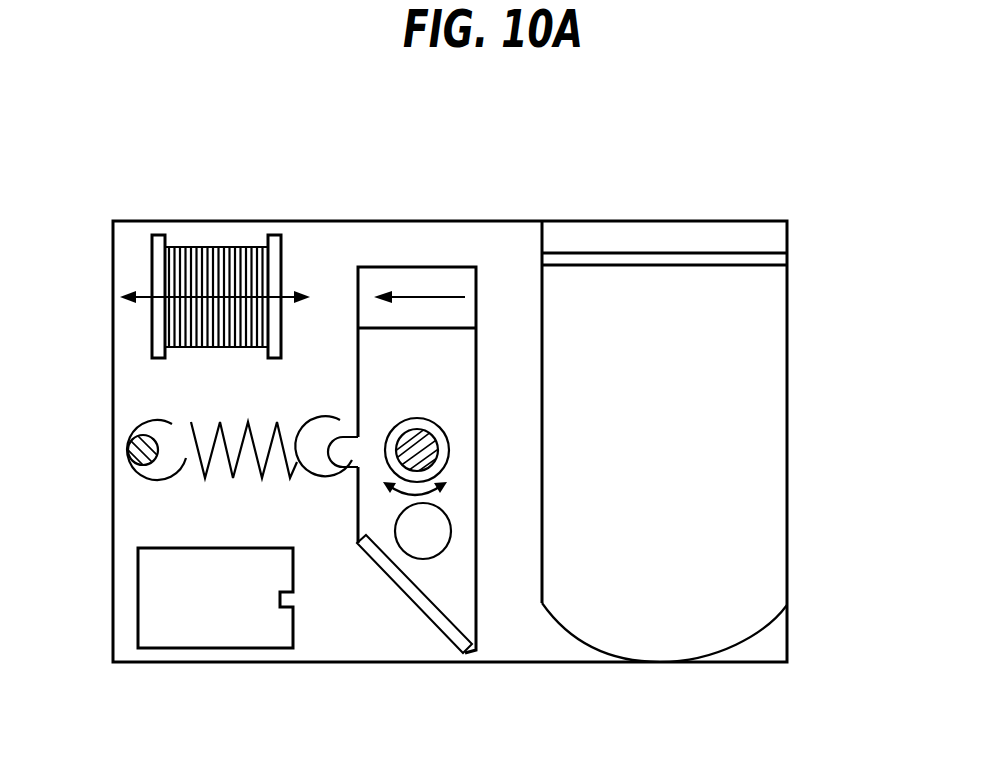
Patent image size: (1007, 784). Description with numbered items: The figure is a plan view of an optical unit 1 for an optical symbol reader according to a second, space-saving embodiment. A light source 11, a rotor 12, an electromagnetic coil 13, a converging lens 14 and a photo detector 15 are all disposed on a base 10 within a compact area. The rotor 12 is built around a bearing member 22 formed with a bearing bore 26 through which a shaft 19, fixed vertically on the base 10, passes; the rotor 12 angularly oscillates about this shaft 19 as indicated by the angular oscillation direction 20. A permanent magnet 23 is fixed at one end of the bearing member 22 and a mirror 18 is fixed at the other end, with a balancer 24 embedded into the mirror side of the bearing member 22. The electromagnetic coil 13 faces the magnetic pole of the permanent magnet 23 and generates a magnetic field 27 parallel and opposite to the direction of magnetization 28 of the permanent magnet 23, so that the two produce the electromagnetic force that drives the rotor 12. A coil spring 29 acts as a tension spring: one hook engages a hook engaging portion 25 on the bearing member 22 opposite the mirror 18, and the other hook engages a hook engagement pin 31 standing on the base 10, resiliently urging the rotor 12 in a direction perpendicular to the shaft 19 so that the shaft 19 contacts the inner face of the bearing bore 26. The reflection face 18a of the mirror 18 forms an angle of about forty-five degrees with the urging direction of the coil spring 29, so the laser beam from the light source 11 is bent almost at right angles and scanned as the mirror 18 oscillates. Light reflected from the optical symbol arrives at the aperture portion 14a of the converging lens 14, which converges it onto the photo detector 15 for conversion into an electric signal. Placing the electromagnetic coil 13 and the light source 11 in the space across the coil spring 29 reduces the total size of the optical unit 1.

The optical unit 1 is at (675, 162).
The base 10 is at (327, 658).
The light source 11 is at (260, 625).
The rotor 12 is at (468, 593).
The electromagnetic coil 13 is at (212, 247).
The converging lens 14 is at (767, 370).
The aperture portion 14a is at (740, 638).
The photo detector 15 is at (720, 237).
The mirror 18 is at (447, 627).
The reflection face 18a is at (395, 582).
The shaft 19 is at (447, 440).
The angular oscillation direction 20 is at (403, 497).
The bearing member 22 is at (438, 358).
The permanent magnet 23 is at (438, 273).
The balancer 24 is at (447, 525).
The hook engaging portion 25 is at (318, 418).
The bearing bore 26 is at (420, 423).
The direction of magnetic field 27 is at (147, 298).
The direction of magnetization 28 is at (408, 295).
The coil spring 29 is at (205, 477).
The hook engagement pin 31 is at (128, 461).